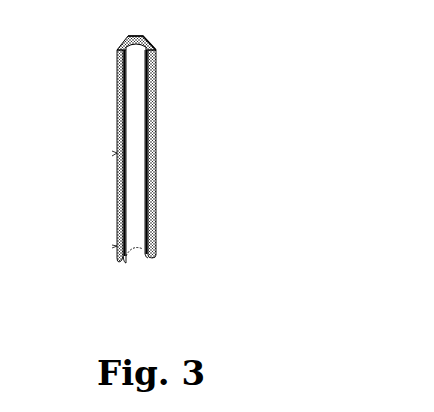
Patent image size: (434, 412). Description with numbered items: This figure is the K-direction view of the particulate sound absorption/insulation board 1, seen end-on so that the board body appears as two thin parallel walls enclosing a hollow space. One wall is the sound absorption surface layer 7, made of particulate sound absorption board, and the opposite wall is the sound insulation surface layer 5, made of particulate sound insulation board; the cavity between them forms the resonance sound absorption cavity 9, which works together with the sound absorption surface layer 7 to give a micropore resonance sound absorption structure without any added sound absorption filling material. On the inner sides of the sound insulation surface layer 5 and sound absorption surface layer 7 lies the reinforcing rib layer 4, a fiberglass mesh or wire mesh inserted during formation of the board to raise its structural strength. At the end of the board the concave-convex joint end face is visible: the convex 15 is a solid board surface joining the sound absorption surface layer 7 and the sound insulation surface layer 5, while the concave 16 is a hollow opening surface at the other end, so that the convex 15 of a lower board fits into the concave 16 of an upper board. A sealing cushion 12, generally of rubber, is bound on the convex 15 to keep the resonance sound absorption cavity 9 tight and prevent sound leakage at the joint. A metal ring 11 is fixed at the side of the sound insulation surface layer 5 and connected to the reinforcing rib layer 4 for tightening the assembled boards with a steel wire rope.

The sound absorption/insulation board 1 is at (136, 148).
The reinforcing rib layer 4 is at (118, 217).
The sound insulation surface layer 5 is at (118, 192).
The sound absorption surface layer 7 is at (158, 218).
The resonance sound absorption cavity 9 is at (168, 154).
The metal ring 11 is at (118, 153).
The sealing cushion 12 is at (147, 34).
The convex 15 is at (137, 36).
The concave 16 is at (128, 258).